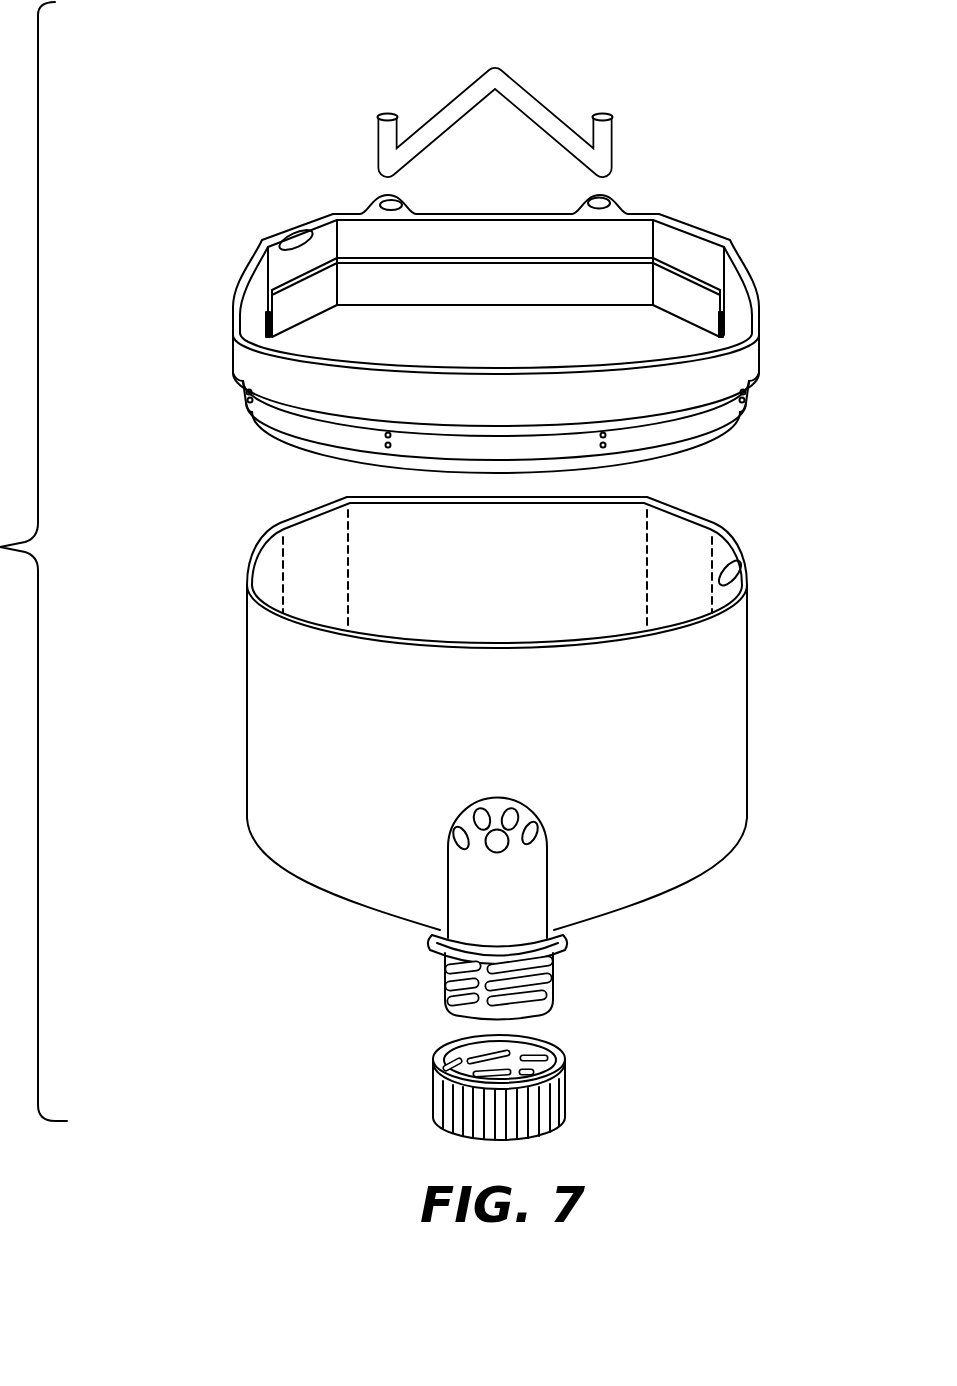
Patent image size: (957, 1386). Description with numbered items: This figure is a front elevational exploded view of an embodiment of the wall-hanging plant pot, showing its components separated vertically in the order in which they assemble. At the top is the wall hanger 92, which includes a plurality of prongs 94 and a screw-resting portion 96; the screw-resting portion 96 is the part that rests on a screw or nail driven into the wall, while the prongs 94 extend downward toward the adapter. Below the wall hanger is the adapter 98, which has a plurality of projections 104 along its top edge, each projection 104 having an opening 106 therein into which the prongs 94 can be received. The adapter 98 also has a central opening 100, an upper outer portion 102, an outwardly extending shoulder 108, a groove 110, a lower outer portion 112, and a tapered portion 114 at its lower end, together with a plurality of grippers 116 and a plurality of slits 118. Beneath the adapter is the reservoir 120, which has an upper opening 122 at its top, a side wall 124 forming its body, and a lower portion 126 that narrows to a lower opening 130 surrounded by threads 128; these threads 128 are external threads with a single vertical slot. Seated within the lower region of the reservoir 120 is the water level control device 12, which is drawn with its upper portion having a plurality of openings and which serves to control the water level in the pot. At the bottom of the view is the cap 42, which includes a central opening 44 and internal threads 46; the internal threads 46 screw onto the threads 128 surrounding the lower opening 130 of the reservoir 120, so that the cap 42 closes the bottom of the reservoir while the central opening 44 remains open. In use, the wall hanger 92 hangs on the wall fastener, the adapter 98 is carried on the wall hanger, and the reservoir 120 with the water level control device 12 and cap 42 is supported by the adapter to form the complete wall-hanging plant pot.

The water level control device 12 is at (514, 896).
The cap 42 is at (481, 1081).
The central opening 44 is at (433, 1049).
The internal threads 46 is at (565, 1057).
The wall hanger 92 is at (499, 92).
The prongs 94 is at (387, 130).
The screw-resting portion 96 is at (497, 83).
The adapter 98 is at (458, 329).
The central opening 100 is at (282, 240).
The upper outer portion 102 is at (760, 345).
The projections 104 is at (373, 202).
The opening 106 is at (592, 203).
The outwardly extending shoulder 108 is at (757, 372).
The groove 110 is at (733, 412).
The lower outer portion 112 is at (288, 418).
The tapered portion 114 is at (307, 443).
The grippers 116 is at (250, 401).
The slits 118 is at (720, 323).
The reservoir 120 is at (462, 762).
The upper opening 122 is at (744, 580).
The side wall 124 is at (748, 728).
The lower portion 126 is at (660, 903).
The threads 128 is at (443, 967).
The lower opening 130 is at (523, 1019).